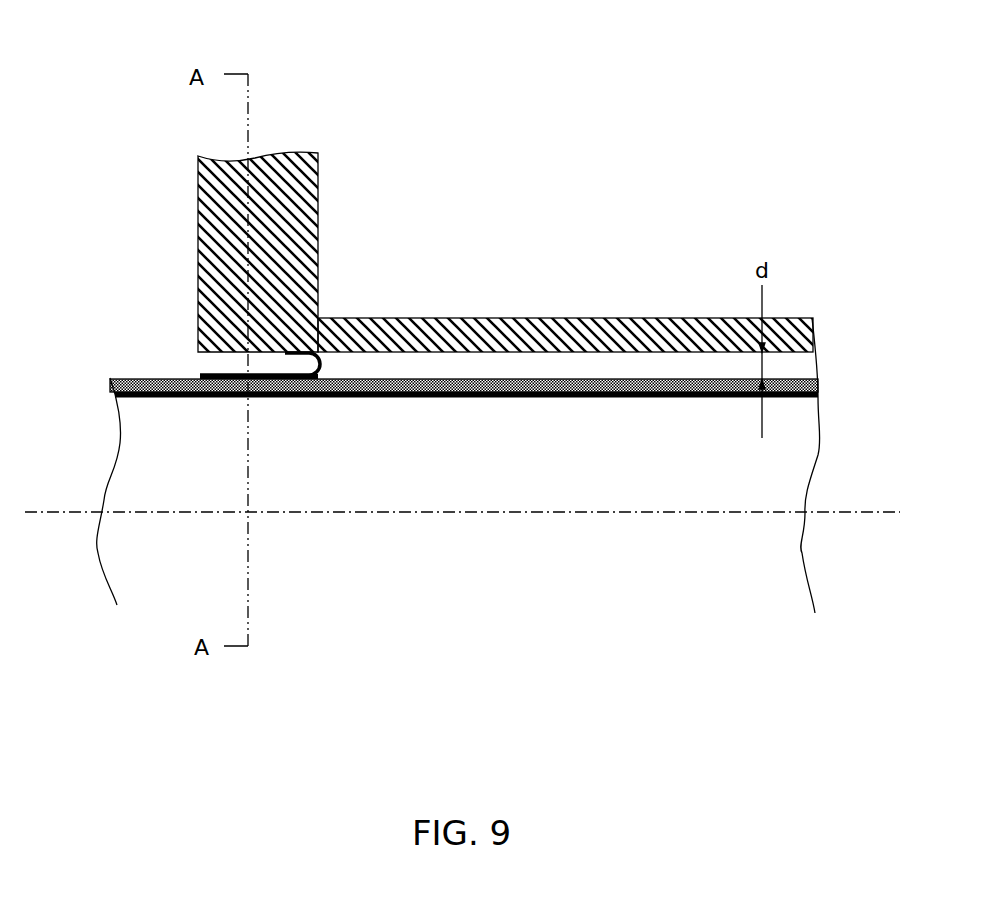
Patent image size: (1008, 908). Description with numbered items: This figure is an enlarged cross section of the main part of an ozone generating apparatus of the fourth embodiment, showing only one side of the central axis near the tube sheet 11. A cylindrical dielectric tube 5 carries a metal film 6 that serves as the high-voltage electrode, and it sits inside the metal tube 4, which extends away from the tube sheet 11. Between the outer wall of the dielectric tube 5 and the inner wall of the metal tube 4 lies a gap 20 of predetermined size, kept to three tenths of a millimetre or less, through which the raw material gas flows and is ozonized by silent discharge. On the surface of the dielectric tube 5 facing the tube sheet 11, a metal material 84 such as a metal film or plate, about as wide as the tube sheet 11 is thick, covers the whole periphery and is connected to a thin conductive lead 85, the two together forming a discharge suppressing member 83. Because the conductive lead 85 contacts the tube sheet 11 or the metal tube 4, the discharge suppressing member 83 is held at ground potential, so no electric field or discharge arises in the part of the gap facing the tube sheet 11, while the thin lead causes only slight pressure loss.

The tube sheet 11 is at (318, 172).
The metal tube 4 is at (395, 328).
The gap 20 is at (628, 368).
The metal film 6 is at (685, 398).
The dielectric tube 5 is at (550, 398).
The discharge suppressing member 83 is at (305, 425).
The metal material 84 is at (275, 398).
The conductive lead 85 is at (320, 362).